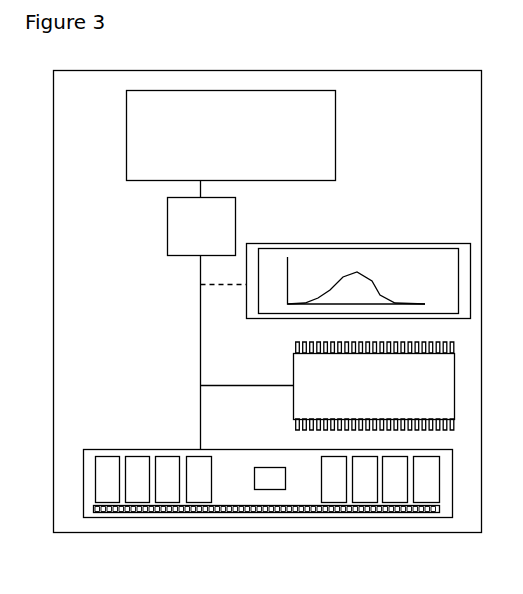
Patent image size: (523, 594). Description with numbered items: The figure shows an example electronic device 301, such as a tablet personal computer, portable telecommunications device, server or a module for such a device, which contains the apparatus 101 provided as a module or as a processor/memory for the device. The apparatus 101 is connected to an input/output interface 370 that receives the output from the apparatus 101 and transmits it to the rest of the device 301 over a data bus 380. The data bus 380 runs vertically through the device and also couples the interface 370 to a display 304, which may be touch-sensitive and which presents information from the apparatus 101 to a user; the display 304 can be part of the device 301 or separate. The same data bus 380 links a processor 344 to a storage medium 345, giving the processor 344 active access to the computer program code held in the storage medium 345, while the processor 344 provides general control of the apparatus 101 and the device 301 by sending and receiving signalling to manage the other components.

The electronic device 301 is at (137, 537).
The apparatus 101 is at (249, 149).
The input/output interface 370 is at (218, 238).
The data bus 380 is at (197, 346).
The display 304 is at (373, 258).
The processor 344 is at (394, 398).
The storage medium 345 is at (232, 490).